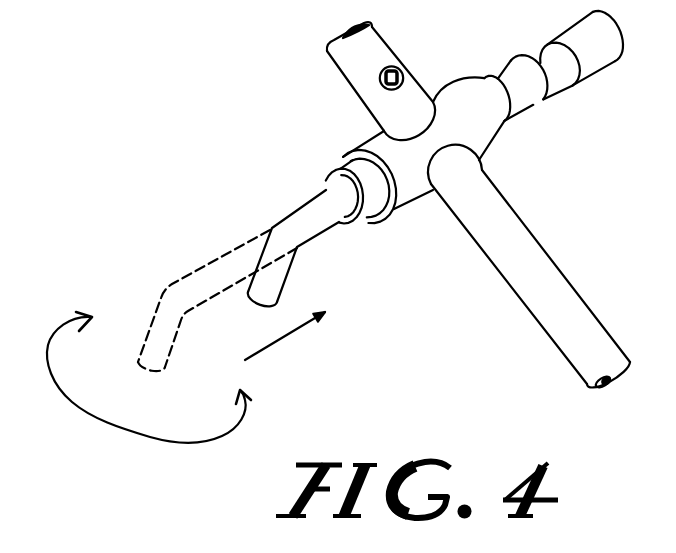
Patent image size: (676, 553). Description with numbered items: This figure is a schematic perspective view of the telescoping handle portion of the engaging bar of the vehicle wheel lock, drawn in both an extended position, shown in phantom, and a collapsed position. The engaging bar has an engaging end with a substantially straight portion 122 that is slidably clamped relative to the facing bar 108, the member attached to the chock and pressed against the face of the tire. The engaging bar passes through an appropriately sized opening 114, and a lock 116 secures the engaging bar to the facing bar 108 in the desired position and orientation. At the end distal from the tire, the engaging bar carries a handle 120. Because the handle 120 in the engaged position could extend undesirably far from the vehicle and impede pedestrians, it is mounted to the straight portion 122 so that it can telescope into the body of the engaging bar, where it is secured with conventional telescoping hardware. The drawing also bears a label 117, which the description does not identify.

The facing bar 108 is at (480, 208).
The opening 114 is at (382, 220).
The lock 116 is at (403, 64).
The nut 117 is at (343, 172).
The handle portion 120 is at (152, 327).
The straight portion 122 is at (303, 223).